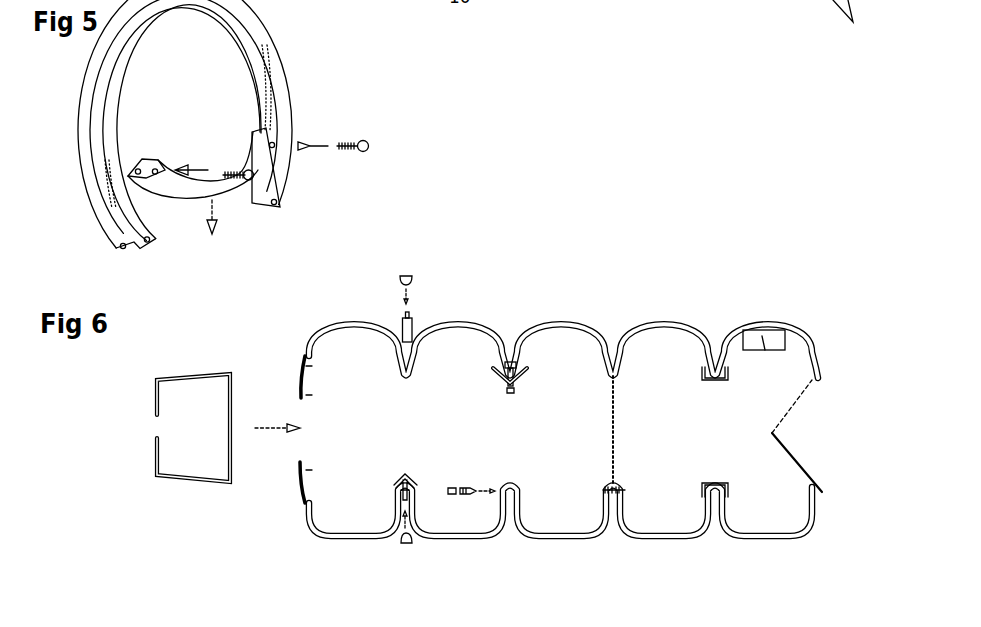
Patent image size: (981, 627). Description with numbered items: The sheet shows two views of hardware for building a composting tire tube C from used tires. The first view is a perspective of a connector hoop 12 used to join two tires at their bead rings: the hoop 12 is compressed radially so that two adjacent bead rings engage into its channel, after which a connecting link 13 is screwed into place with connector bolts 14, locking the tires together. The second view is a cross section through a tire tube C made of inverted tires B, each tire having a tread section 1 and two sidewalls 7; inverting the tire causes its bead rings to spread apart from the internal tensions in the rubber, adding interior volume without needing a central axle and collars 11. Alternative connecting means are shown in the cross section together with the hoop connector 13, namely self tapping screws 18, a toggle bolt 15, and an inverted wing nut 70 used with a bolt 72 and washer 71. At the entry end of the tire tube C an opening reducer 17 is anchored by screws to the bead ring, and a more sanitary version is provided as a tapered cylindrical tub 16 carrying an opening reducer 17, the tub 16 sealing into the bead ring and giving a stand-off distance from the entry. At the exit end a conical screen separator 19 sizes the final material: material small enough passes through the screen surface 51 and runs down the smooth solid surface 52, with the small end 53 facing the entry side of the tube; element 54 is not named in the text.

In FIG. 6, the tread section 1 is at (662, 537).
In FIG. 6, the sidewalls 7 is at (623, 360).
In FIG. 5, the collars 11 is at (687, 0).
In FIG. 5, the connector hoop 12 is at (78, 75).
In FIG. 6, the connector hoop 12 is at (706, 382).
In FIG. 5, the connecting link 13 is at (228, 197).
In FIG. 5, the connector bolts 14 is at (356, 152).
In FIG. 6, the toggle bolt 15 is at (400, 330).
In FIG. 6, the tapered cylindrical tub 16 is at (157, 398).
In FIG. 6, the opening reducer 17 is at (157, 425).
In FIG. 6, the self tapping screws 18 is at (466, 486).
In FIG. 6, the conical screen separator 19 is at (604, 390).
In FIG. 6, the screen surface 51 is at (812, 380).
In FIG. 6, the smooth solid surface 52 is at (813, 480).
In FIG. 6, the small end 53 is at (772, 434).
In FIG. 6, the cover plate 54 is at (766, 350).
In FIG. 6, the inverted wing nut 70 is at (493, 371).
In FIG. 6, the washer 71 is at (518, 370).
In FIG. 6, the bolt 72 is at (508, 355).
In FIG. 6, the inverted tire B is at (470, 318).
In FIG. 6, the tire tube C is at (694, 301).